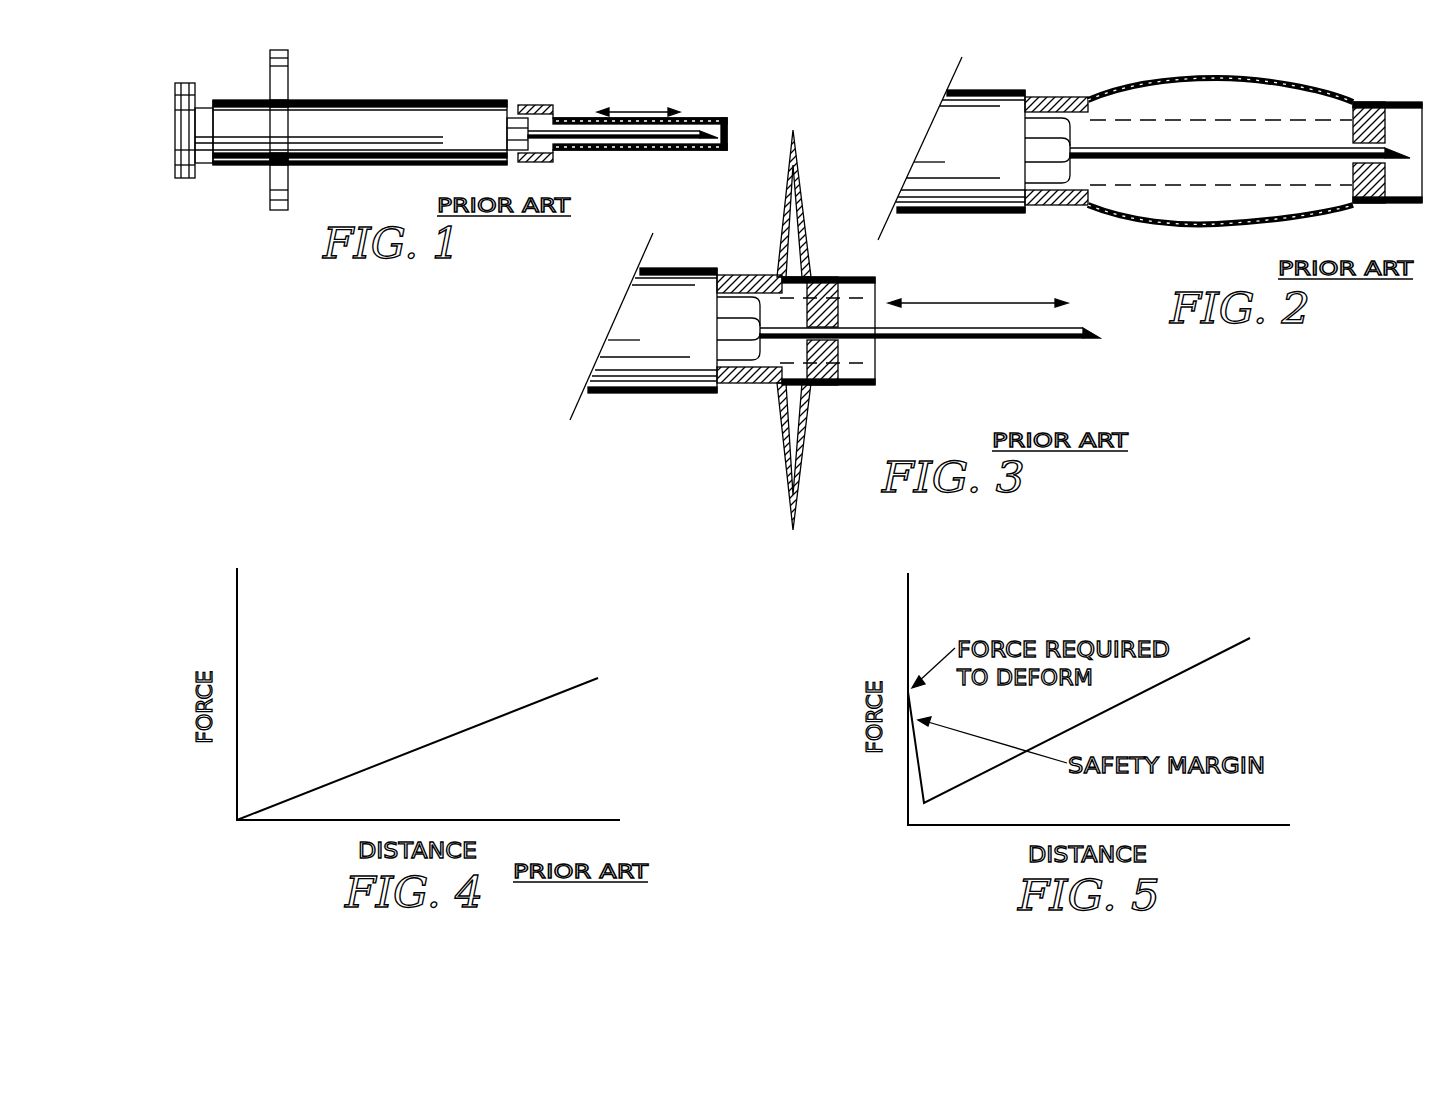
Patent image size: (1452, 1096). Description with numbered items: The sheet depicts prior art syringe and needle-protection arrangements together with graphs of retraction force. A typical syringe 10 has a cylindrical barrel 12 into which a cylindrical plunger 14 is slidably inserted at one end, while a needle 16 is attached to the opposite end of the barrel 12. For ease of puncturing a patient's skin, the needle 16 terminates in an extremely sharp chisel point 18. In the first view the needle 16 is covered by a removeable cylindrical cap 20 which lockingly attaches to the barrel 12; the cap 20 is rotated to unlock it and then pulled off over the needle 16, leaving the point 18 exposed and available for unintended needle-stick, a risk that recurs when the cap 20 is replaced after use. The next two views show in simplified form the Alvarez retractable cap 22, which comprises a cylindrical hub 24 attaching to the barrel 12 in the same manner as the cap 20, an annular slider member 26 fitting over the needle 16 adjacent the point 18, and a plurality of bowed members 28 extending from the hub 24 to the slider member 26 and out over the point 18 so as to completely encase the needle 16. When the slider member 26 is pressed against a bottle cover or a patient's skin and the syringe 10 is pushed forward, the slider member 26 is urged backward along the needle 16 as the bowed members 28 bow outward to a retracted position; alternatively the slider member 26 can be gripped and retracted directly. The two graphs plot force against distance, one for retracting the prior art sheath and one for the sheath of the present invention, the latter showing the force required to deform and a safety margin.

In FIG. 1, the syringe 10 is at (456, 130).
In FIG. 1, the cylindrical barrel 12 is at (313, 117).
In FIG. 2, the cylindrical barrel 12 is at (945, 140).
In FIG. 3, the cylindrical barrel 12 is at (637, 320).
In FIG. 1, the cylindrical plunger 14 is at (200, 106).
In FIG. 1, the needle 16 is at (633, 102).
In FIG. 2, the needle 16 is at (1243, 166).
In FIG. 3, the needle 16 is at (947, 341).
In FIG. 1, the chisel point 18 is at (709, 132).
In FIG. 2, the chisel point 18 is at (1395, 158).
In FIG. 3, the chisel point 18 is at (1086, 333).
In FIG. 1, the removeable cylindrical cap 20 is at (573, 150).
In FIG. 2, the retractable cap 22 is at (1182, 164).
In FIG. 3, the retractable cap 22 is at (885, 330).
In FIG. 2, the cylindrical hub 24 is at (1043, 206).
In FIG. 3, the cylindrical hub 24 is at (735, 385).
In FIG. 2, the annular slider member 26 is at (1358, 205).
In FIG. 3, the annular slider member 26 is at (840, 385).
In FIG. 2, the bowed members 28 is at (1130, 90).
In FIG. 3, the bowed members 28 is at (790, 206).